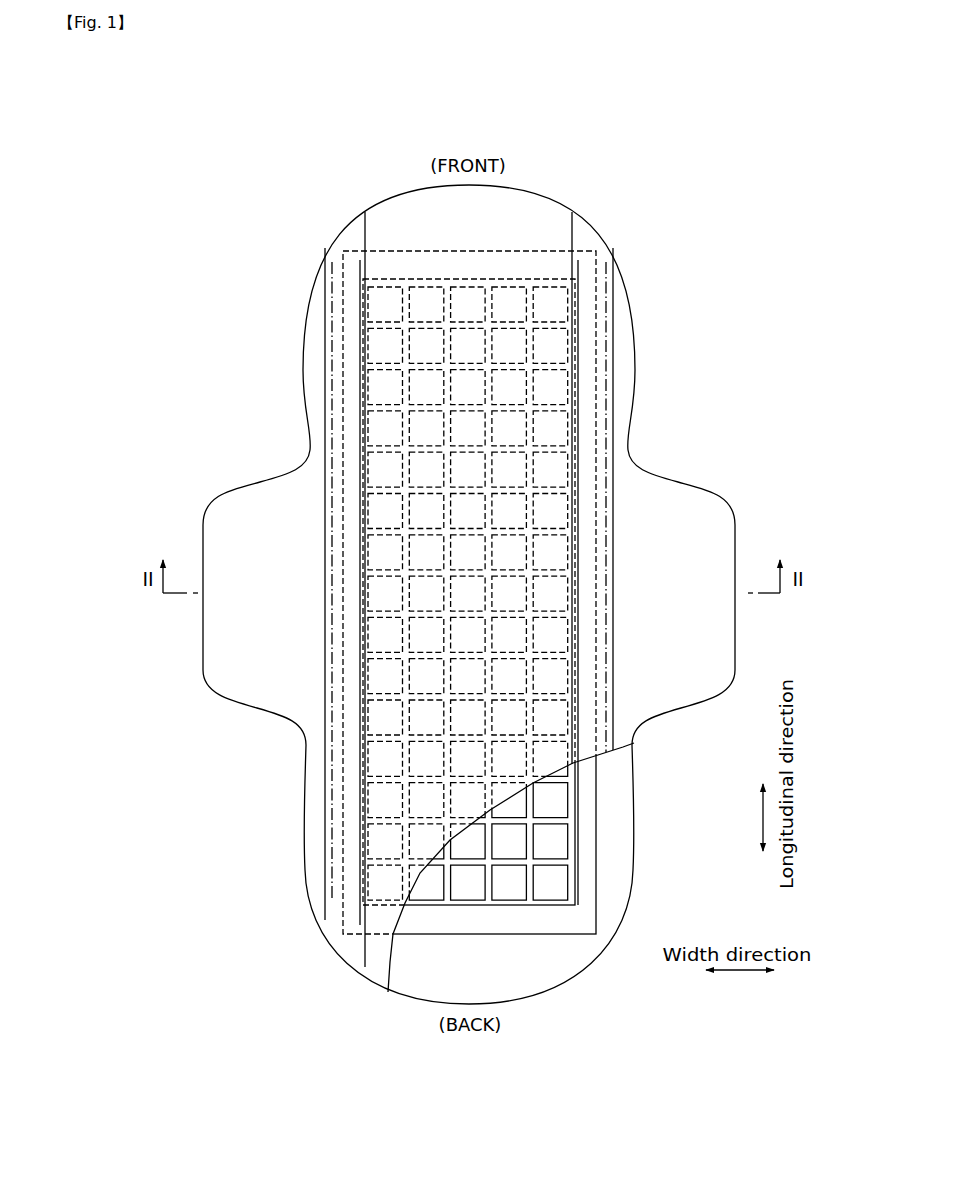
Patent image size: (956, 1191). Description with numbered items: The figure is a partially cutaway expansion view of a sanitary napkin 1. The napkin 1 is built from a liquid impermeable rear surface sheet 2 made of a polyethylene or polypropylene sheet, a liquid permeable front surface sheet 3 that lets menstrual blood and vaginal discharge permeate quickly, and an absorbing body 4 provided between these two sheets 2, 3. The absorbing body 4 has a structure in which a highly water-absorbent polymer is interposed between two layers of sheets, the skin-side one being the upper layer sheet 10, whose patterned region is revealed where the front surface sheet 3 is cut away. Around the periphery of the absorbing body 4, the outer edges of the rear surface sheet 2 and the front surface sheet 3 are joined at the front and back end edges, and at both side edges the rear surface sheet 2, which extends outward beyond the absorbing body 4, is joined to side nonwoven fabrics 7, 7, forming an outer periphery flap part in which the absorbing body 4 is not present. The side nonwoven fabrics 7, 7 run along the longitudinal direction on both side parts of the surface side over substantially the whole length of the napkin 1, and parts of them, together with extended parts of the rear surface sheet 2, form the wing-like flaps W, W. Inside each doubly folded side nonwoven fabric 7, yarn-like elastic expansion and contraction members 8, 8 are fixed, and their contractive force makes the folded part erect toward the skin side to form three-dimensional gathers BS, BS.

The sanitary napkin 1 is at (606, 227).
The liquid impermeable rear surface sheet 2 is at (612, 862).
The liquid permeable front surface sheet 3 is at (387, 957).
The absorbing body 4 is at (597, 788).
The side nonwoven fabric 7 is at (318, 834).
The yarn-like elastic expansion and contraction member 8 is at (360, 507).
The upper layer sheet 10 is at (575, 927).
The wing-like flap W is at (256, 481).
The three-dimensional gather BS is at (323, 603).